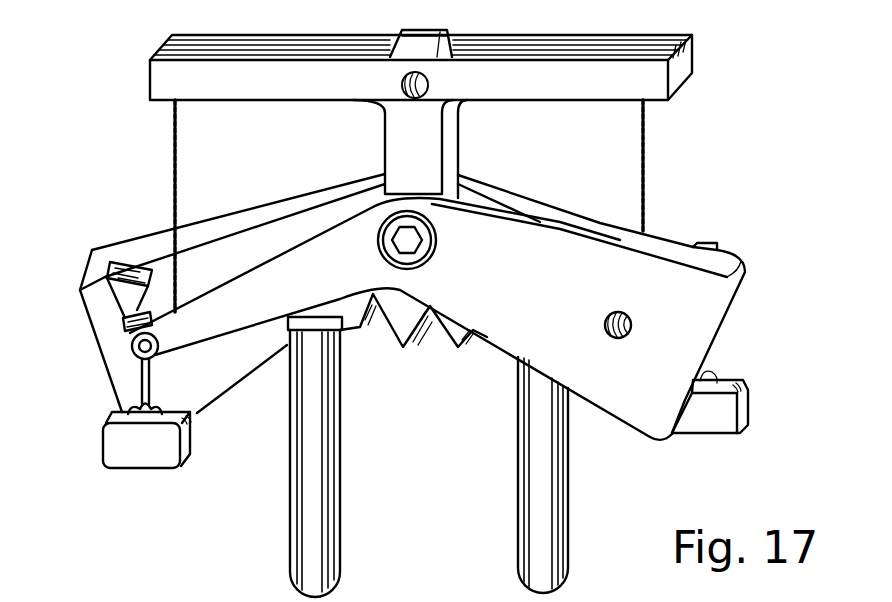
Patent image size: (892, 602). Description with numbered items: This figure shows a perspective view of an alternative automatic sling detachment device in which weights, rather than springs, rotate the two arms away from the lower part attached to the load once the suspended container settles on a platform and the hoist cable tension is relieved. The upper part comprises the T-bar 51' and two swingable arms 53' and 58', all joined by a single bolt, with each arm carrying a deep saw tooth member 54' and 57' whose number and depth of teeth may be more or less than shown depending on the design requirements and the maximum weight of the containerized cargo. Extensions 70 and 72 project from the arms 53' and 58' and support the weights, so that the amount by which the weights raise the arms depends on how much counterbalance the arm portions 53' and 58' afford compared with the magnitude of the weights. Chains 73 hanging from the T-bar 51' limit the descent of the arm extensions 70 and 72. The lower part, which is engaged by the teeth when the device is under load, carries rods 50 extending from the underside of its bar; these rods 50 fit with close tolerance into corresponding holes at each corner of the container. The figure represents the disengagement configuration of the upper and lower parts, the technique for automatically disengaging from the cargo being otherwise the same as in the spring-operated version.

The T-bar 51' is at (375, 55).
The chains 73 is at (170, 158).
The swingable arm 53' is at (392, 188).
The saw tooth member 54' is at (107, 291).
The saw tooth member 57' is at (446, 300).
The swingable arm 58' is at (669, 433).
The rods 50 is at (293, 517).
The arm extension 70 is at (251, 601).
The arm extension 72 is at (597, 601).